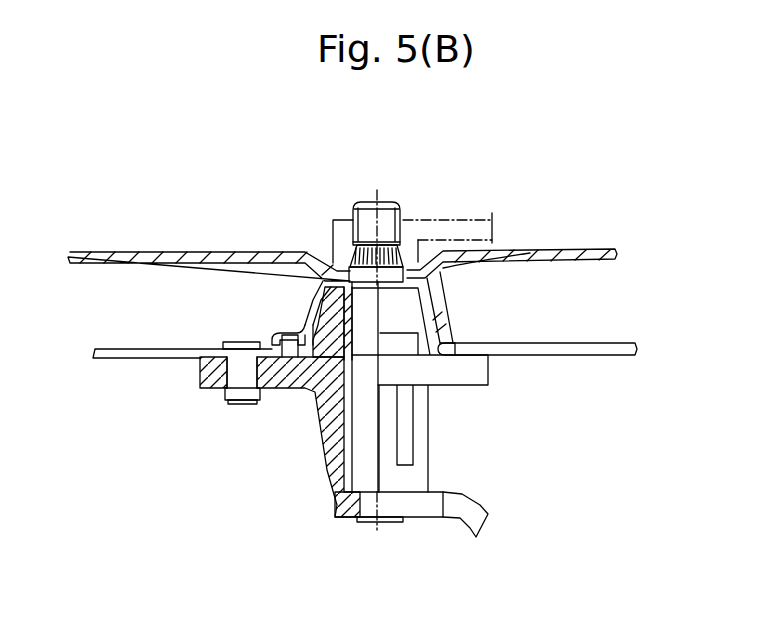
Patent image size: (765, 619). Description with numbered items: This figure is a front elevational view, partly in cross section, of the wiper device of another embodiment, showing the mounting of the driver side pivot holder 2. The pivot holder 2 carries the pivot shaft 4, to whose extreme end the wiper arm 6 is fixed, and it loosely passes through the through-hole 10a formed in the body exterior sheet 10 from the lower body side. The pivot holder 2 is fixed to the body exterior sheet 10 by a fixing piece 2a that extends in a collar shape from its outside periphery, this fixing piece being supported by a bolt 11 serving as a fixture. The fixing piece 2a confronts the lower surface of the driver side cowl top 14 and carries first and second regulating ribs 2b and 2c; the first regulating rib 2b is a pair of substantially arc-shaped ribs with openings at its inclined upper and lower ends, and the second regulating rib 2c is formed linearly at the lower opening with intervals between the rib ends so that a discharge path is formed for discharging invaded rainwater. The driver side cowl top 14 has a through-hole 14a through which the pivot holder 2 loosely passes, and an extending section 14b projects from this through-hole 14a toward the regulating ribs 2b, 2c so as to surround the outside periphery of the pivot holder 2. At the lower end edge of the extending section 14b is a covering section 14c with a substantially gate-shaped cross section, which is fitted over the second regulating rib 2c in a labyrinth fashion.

The driver side pivot holder 2 is at (330, 470).
The fixing piece 2a is at (273, 390).
The first regulating rib 2b is at (410, 347).
The second regulating rib 2c is at (283, 390).
The pivot shaft 4 is at (388, 200).
The wiper arm 6 is at (460, 222).
The body exterior sheet 10 is at (597, 356).
The through-hole 10a is at (453, 343).
The bolt 11 is at (225, 346).
The driver side cowl top 14 is at (162, 252).
The through-hole 14a is at (328, 260).
The extending section 14b is at (533, 251).
The covering section 14c is at (296, 325).